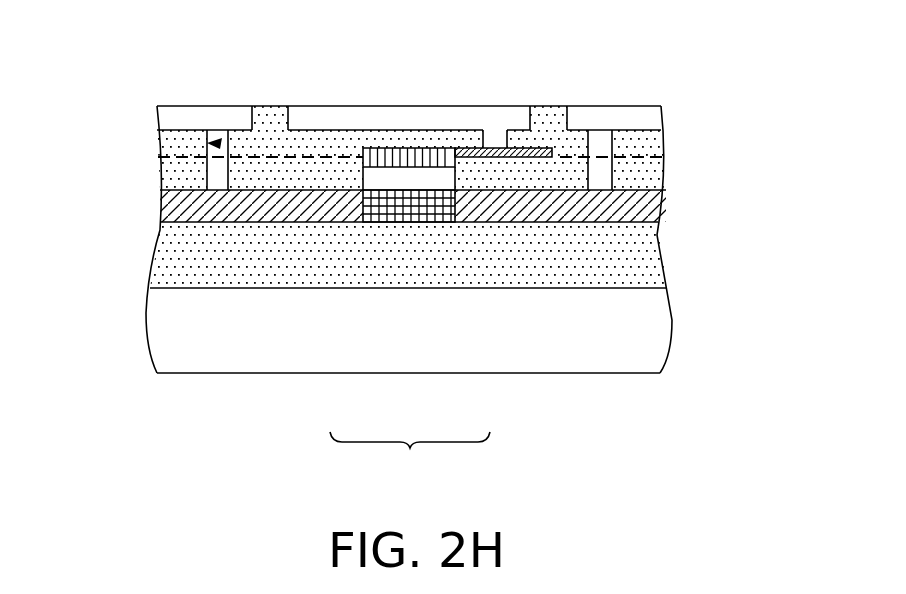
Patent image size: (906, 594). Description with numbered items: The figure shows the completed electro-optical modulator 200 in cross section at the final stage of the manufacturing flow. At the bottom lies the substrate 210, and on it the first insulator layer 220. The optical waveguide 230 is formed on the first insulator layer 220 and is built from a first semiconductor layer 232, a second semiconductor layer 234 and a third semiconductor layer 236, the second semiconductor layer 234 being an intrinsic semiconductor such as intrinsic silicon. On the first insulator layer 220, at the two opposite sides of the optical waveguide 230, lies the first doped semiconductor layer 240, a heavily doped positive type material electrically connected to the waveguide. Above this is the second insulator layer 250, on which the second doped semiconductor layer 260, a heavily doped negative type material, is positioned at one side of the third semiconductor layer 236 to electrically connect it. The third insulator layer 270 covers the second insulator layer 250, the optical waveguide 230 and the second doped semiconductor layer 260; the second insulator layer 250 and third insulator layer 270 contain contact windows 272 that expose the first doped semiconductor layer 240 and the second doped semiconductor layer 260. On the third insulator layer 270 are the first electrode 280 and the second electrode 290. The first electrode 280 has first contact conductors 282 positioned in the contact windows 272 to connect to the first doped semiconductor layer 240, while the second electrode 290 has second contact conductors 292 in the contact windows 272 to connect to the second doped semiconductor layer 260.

The electro-optical modulator 200 is at (785, 473).
The substrate 210 is at (627, 328).
The first insulator layer 220 is at (620, 260).
The optical waveguide 230 is at (410, 458).
The first semiconductor layer 232 is at (380, 205).
The second semiconductor layer 234 is at (403, 177).
The third semiconductor layer 236 is at (427, 160).
The first doped semiconductor layer 240 is at (203, 207).
The second insulator layer 250 is at (182, 180).
The second doped semiconductor layer 260 is at (467, 143).
The third insulator layer 270 is at (177, 148).
The contact windows 272 is at (212, 142).
The first electrode 280 is at (185, 122).
The first contact conductors 282 is at (217, 178).
The second electrode 290 is at (383, 122).
The second contact conductors 292 is at (493, 138).